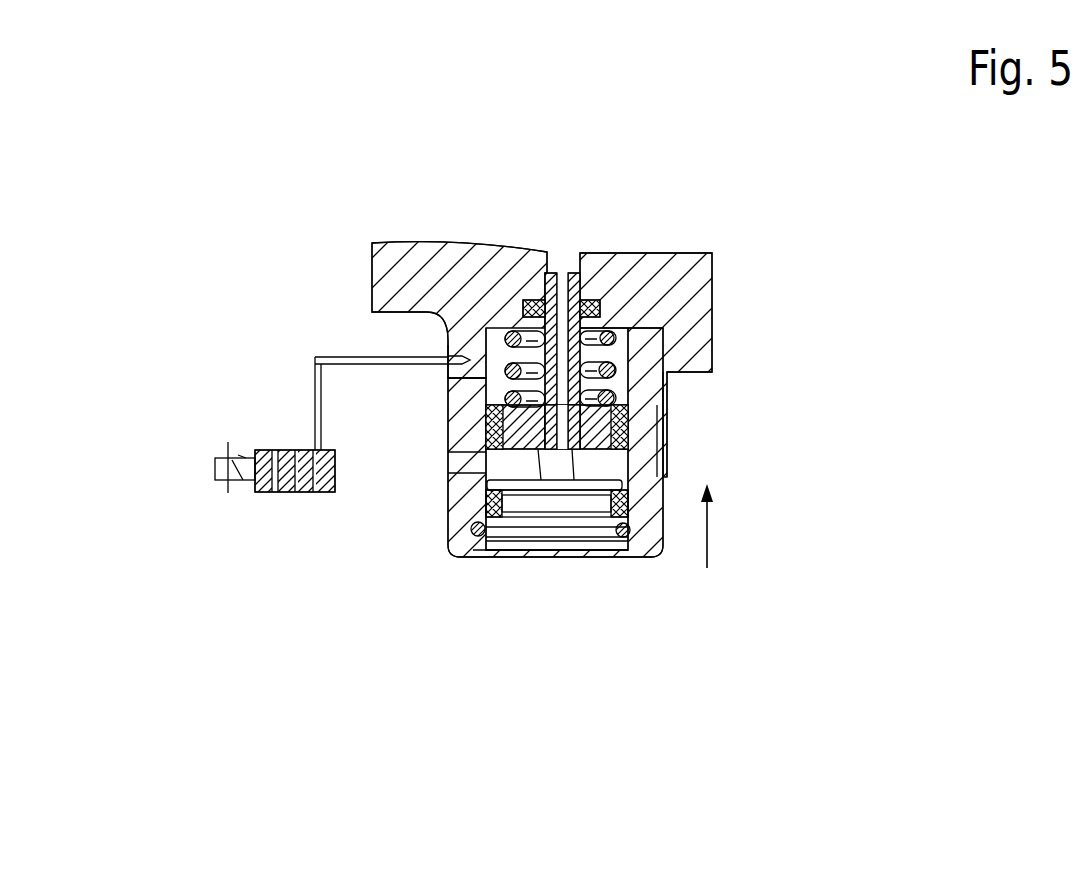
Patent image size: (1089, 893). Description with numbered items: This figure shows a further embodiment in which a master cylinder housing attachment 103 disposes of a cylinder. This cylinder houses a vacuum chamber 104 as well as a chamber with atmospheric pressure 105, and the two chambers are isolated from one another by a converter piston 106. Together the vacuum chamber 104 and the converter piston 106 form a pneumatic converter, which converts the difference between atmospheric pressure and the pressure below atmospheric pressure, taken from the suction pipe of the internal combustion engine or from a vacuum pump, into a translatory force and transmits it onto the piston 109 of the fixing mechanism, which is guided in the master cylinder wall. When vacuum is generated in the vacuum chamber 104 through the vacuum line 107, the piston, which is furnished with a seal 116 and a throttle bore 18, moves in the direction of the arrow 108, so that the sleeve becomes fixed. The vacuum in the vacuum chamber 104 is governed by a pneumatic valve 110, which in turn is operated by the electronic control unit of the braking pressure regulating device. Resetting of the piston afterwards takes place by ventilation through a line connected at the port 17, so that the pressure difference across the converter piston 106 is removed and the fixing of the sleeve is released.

The port 17 is at (452, 353).
The vacuum line 107 is at (317, 357).
The pneumatic valve 110 is at (303, 449).
The master cylinder housing attachment 103 is at (440, 494).
The throttle bore 18 is at (560, 273).
The piston 109 is at (600, 270).
The seal 116 is at (600, 306).
The vacuum chamber 104 is at (617, 350).
The converter piston 106 is at (628, 440).
The chamber with atmospheric pressure 105 is at (607, 472).
The arrow 108 is at (707, 547).